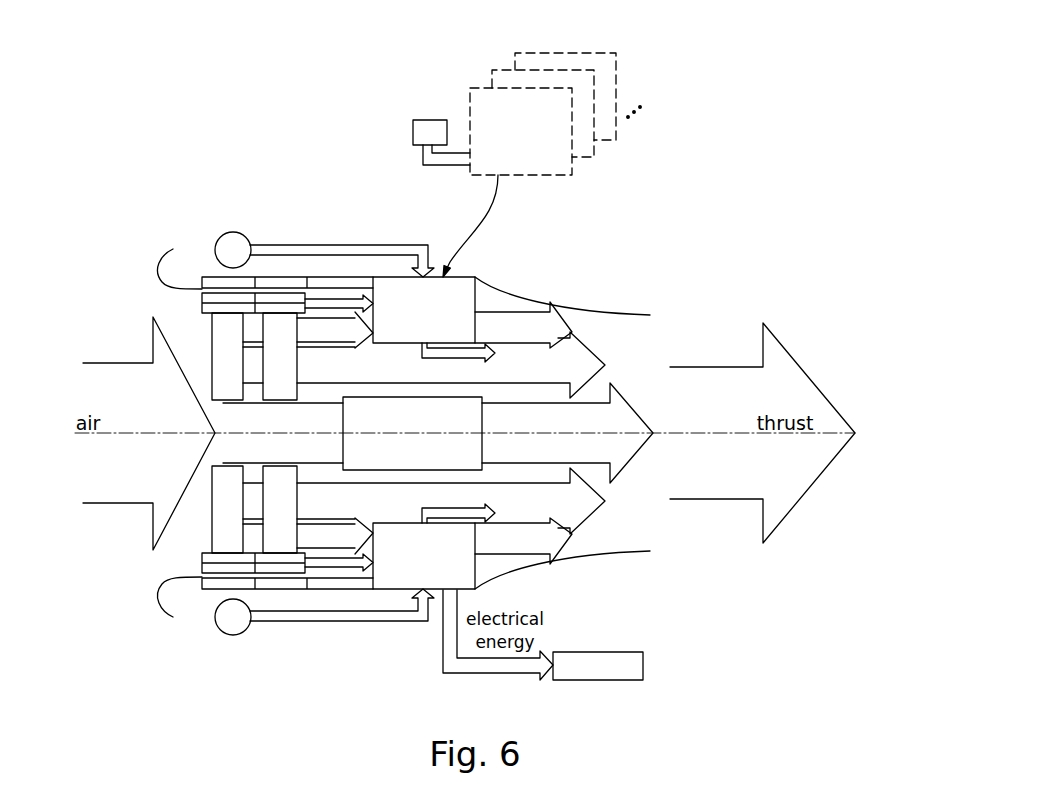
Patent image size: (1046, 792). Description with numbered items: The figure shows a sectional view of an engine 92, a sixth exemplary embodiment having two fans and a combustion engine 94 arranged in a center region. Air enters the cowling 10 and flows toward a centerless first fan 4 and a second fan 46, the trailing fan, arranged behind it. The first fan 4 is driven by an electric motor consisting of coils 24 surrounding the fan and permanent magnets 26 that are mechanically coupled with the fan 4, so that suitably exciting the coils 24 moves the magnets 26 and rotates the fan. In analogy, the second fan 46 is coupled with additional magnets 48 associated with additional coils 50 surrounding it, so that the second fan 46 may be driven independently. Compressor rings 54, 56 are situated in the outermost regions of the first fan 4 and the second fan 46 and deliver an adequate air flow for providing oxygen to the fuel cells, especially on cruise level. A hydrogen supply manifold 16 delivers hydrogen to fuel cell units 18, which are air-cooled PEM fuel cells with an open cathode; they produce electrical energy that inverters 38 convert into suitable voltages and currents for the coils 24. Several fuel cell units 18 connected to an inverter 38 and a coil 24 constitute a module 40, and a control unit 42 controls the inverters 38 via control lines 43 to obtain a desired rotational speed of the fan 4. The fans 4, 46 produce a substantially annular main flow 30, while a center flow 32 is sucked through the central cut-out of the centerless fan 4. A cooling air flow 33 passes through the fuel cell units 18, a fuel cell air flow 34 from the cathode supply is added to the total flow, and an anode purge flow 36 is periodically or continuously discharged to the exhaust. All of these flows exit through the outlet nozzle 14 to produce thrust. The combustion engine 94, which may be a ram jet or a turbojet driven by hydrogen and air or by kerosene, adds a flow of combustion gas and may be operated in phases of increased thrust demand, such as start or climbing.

The fan 4 is at (218, 350).
The cowling 10 is at (165, 240).
The outlet nozzle 14 is at (630, 310).
The hydrogen supply manifold 16 is at (235, 232).
The fuel cell unit 18 is at (411, 320).
The coil 24 is at (217, 282).
The permanent magnet 26 is at (200, 300).
The main flow 30 is at (580, 355).
The center flow 32 is at (632, 413).
The cooling air flow 33 is at (357, 335).
The fuel cell air flow 34 is at (573, 292).
The anode purge flow 36 is at (478, 353).
The inverter 38 is at (357, 283).
The module 40 is at (480, 97).
The control unit 42 is at (427, 128).
The control line 43 is at (463, 148).
The second fan 46 is at (283, 365).
The additional magnet 48 is at (289, 298).
The additional coil 50 is at (275, 283).
The compressor ring 54 is at (200, 308).
The compressor ring 56 is at (300, 308).
The engine 92 is at (678, 232).
The combustion engine 94 is at (481, 400).